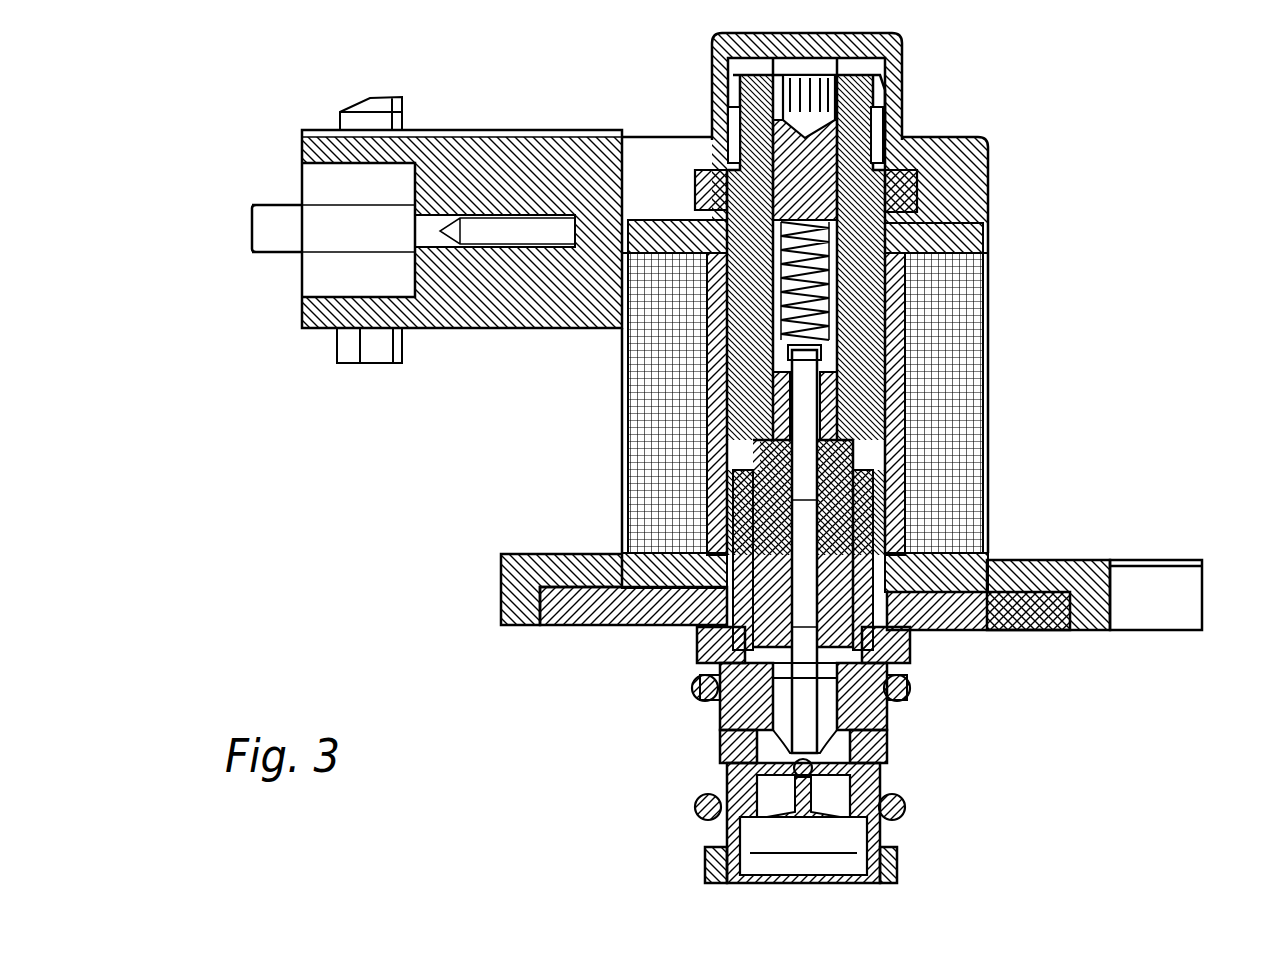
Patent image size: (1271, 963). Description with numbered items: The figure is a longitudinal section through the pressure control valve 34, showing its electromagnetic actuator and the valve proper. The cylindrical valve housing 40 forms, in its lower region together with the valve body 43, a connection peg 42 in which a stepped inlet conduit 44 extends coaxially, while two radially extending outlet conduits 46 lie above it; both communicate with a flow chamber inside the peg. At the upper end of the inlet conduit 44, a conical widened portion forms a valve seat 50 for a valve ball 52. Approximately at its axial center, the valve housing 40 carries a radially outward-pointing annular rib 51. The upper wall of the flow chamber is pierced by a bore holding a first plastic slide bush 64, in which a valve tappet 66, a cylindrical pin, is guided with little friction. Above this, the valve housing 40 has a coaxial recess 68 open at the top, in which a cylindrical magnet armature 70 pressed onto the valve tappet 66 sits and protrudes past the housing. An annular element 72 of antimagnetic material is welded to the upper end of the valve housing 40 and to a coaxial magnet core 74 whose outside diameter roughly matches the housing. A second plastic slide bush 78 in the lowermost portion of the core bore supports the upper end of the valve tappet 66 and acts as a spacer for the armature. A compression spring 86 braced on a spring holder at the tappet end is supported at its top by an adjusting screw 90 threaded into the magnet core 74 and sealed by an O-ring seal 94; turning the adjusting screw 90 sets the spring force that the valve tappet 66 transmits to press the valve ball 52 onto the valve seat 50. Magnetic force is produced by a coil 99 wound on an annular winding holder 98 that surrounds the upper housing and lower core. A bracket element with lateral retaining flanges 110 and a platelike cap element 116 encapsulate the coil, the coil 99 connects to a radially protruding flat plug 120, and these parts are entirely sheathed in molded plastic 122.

The pressure control valve 34 is at (1132, 223).
The valve housing 40 is at (865, 692).
The connection peg 42 is at (1080, 792).
The valve body 43 is at (865, 835).
The inlet conduit 44 is at (767, 830).
The outlet conduits 46 is at (877, 738).
The valve seat 50 is at (793, 747).
The annular rib 51 is at (710, 645).
The valve ball 52 is at (815, 757).
The first plastic slide bush 64 is at (708, 692).
The valve tappet 66 is at (800, 478).
The recess 68 is at (853, 652).
The magnet armature 70 is at (920, 500).
The annular element 72 is at (903, 472).
The magnet core 74 is at (857, 283).
The second plastic slide bush 78 is at (775, 402).
The compression spring 86 is at (815, 250).
The adjusting screw 90 is at (760, 92).
The O-ring seal 94 is at (817, 177).
The winding holder 98 is at (940, 380).
The coil 99 is at (940, 332).
The retaining flanges 110 is at (584, 615).
The cap element 116 is at (905, 197).
The flat plug 120 is at (498, 162).
The plastic 122 is at (1086, 580).